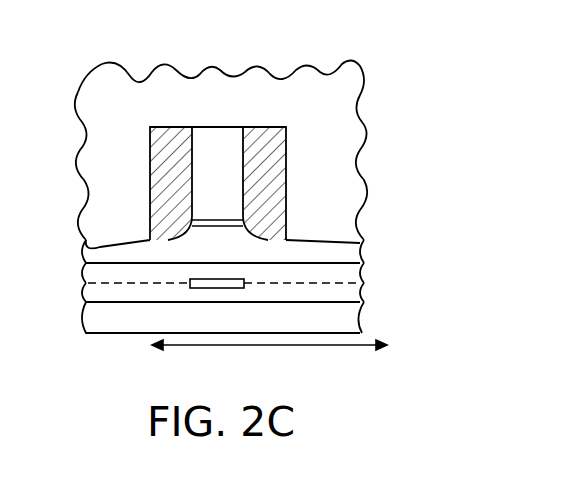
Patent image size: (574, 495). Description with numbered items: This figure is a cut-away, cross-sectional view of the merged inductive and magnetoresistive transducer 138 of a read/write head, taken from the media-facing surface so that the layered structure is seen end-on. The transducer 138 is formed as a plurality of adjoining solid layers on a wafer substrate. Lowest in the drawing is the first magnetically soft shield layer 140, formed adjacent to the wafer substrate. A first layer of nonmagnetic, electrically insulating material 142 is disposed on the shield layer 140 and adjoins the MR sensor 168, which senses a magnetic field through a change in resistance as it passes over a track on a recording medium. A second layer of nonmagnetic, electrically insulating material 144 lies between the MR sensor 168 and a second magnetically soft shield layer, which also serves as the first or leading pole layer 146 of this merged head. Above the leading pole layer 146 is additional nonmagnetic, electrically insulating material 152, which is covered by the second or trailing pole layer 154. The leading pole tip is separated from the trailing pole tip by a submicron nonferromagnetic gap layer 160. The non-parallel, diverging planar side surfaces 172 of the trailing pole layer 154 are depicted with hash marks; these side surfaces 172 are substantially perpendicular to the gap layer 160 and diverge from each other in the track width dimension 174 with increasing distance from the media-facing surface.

The merged inductive and magnetoresistive transducer 138 is at (272, 40).
The first magnetically soft shield layer 140 is at (356, 320).
The first layer of nonmagnetic, electrically insulating material 142 is at (357, 292).
The second layer of nonmagnetic, electrically insulating material 144 is at (357, 268).
The leading pole layer 146 is at (358, 250).
The nonmagnetic, electrically insulating material 152 is at (321, 194).
The trailing pole layer 154 is at (226, 136).
The submicron nonferromagnetic gap layer 160 is at (204, 225).
The MR sensor 168 is at (228, 292).
The diverging side surfaces 172 is at (166, 176).
The track width dimension 174 is at (328, 348).